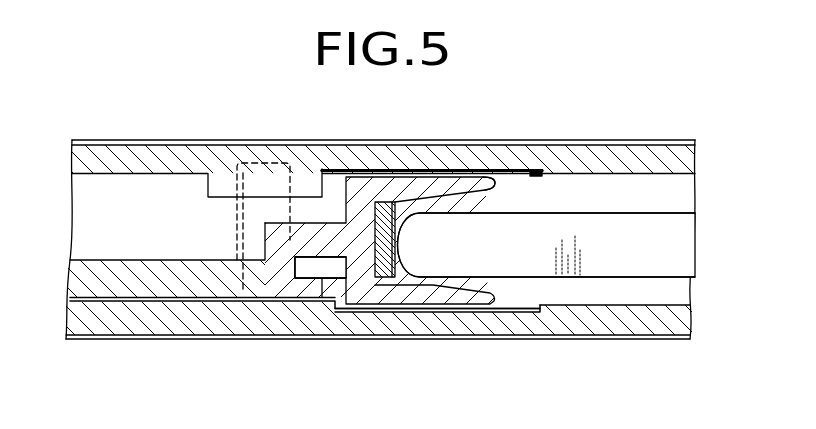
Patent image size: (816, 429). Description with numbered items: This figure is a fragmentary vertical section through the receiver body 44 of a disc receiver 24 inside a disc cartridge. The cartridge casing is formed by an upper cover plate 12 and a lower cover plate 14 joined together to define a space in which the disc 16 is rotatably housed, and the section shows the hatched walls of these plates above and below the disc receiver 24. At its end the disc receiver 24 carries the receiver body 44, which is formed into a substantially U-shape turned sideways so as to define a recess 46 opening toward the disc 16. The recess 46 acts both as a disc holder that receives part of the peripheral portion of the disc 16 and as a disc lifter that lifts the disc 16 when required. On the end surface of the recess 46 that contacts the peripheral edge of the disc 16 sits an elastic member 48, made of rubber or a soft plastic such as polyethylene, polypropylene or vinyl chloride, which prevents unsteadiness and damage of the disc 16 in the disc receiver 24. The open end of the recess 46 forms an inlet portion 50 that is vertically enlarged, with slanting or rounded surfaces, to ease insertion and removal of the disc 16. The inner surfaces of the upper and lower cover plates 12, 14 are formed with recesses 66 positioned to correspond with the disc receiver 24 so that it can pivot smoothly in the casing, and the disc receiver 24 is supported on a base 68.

The upper cover plate 12 is at (215, 152).
The lower cover plate 14 is at (174, 337).
The disc 16 is at (640, 213).
The disc receiver 24 is at (123, 287).
The receiver body 44 is at (365, 185).
The recess 46 is at (453, 232).
The elastic member 48 is at (385, 212).
The inlet portion 50 is at (498, 185).
The recess 66 is at (528, 170).
The base 68 is at (223, 299).